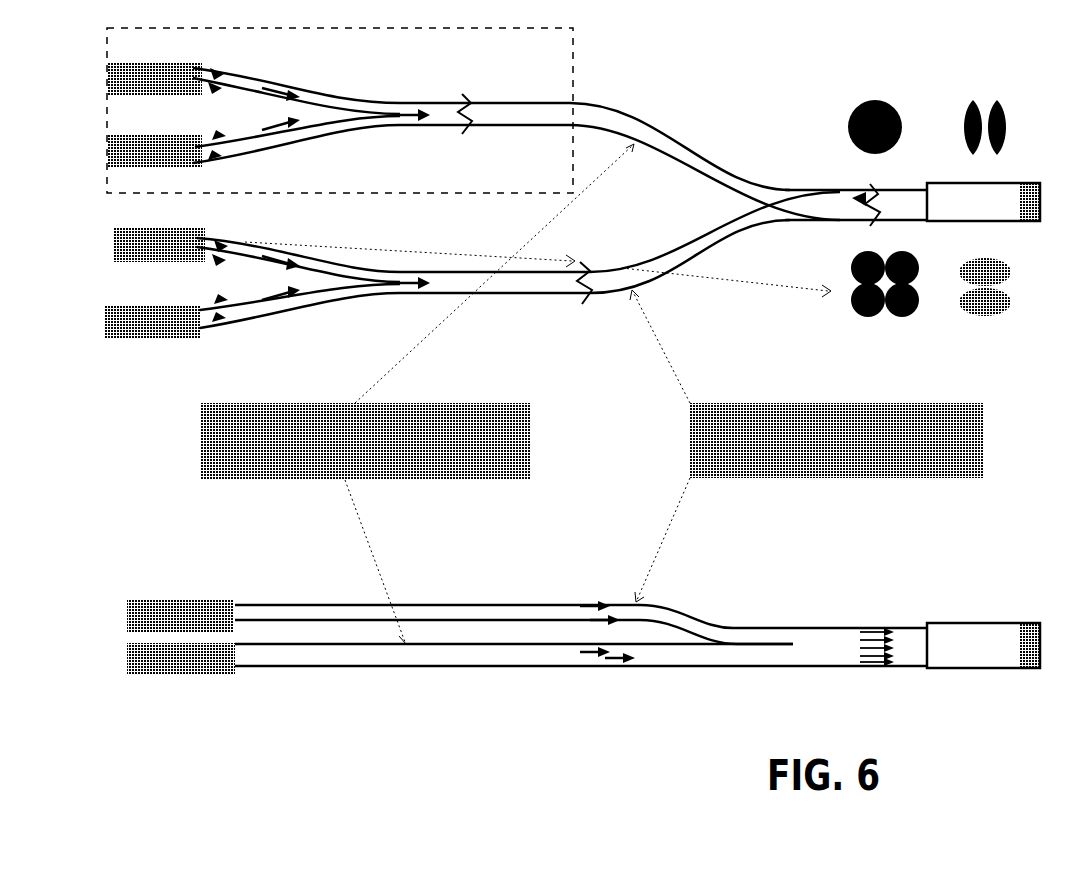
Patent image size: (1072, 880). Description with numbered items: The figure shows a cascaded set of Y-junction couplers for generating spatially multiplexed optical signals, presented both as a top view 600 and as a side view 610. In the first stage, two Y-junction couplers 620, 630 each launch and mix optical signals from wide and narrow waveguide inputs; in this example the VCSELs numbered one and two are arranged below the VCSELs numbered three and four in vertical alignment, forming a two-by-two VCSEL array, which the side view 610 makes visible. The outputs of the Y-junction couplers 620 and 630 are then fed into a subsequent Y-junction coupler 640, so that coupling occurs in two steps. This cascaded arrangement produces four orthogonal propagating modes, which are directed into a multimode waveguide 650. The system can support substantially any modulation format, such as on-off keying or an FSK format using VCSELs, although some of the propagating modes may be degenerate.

The top view 600 is at (866, 76).
The side view 610 is at (905, 571).
The Y-junction coupler 620 is at (480, 102).
The Y-junction coupler 630 is at (483, 295).
The Y-junction coupler 640 is at (823, 190).
The multimode waveguide 650 is at (983, 183).